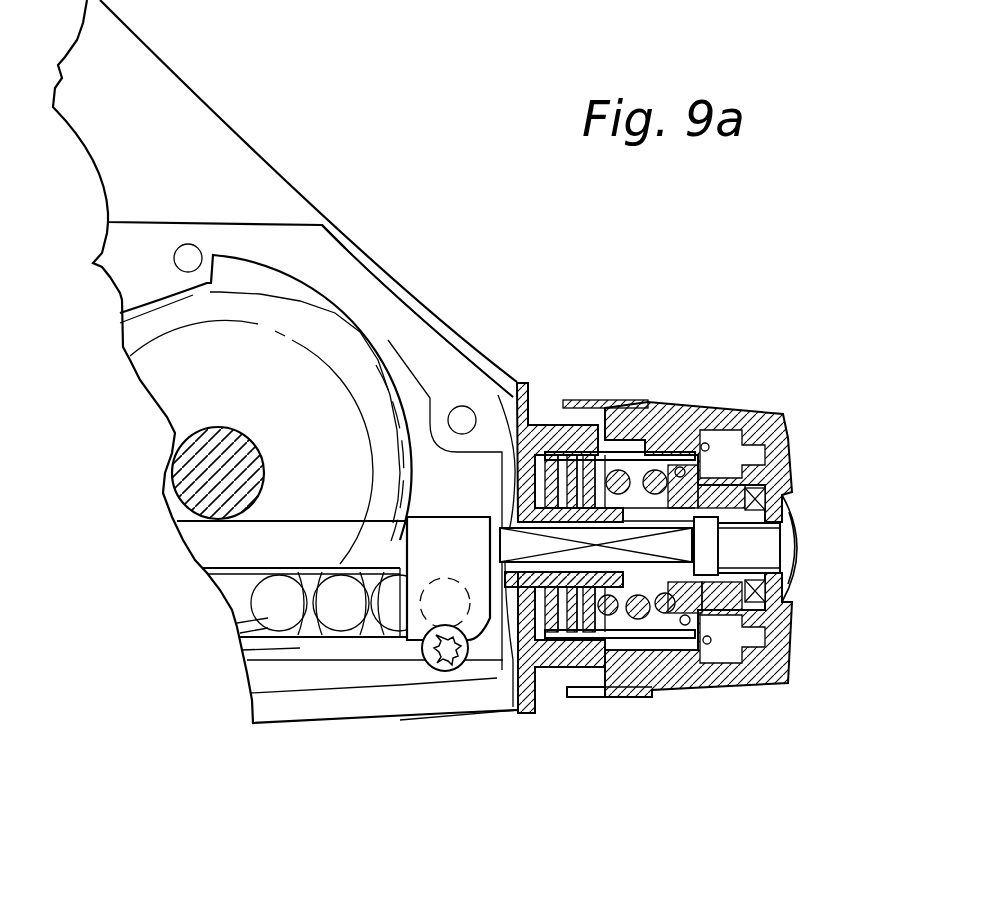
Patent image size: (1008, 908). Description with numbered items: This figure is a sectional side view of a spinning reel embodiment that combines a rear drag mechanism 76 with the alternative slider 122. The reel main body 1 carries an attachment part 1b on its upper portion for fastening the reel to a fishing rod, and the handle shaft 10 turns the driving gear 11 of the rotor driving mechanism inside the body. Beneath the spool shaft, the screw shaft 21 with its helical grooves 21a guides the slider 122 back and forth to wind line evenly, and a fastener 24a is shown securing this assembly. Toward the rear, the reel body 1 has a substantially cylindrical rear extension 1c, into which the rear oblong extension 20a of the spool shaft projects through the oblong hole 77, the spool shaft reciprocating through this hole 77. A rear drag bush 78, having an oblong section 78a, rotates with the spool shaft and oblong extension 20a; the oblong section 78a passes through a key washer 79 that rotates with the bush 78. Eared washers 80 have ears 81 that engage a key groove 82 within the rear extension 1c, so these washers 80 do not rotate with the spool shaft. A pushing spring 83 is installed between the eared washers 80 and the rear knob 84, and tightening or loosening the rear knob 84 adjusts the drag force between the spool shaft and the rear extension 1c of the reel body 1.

The reel main body 1 is at (455, 330).
The attachment part 1b is at (235, 167).
The rear extension 1c is at (556, 690).
The shaft 10 is at (195, 470).
The driving gear 11 is at (335, 352).
The rear oblong extension 20a is at (717, 482).
The screw shaft 21 is at (345, 635).
The helical grooves 21a is at (340, 627).
The fixing screw 24a is at (462, 670).
The rear drag mechanism 76 is at (788, 690).
The oblong hole 77 is at (512, 693).
The rear drag bush 78 is at (545, 612).
The oblong section 78a is at (637, 617).
The key washer 79 is at (597, 652).
The eared washers 80 is at (600, 455).
The ears 81 is at (615, 450).
The key groove 82 is at (722, 647).
The pushing spring 83 is at (655, 452).
The rear knob 84 is at (790, 633).
The slider 122 is at (458, 533).